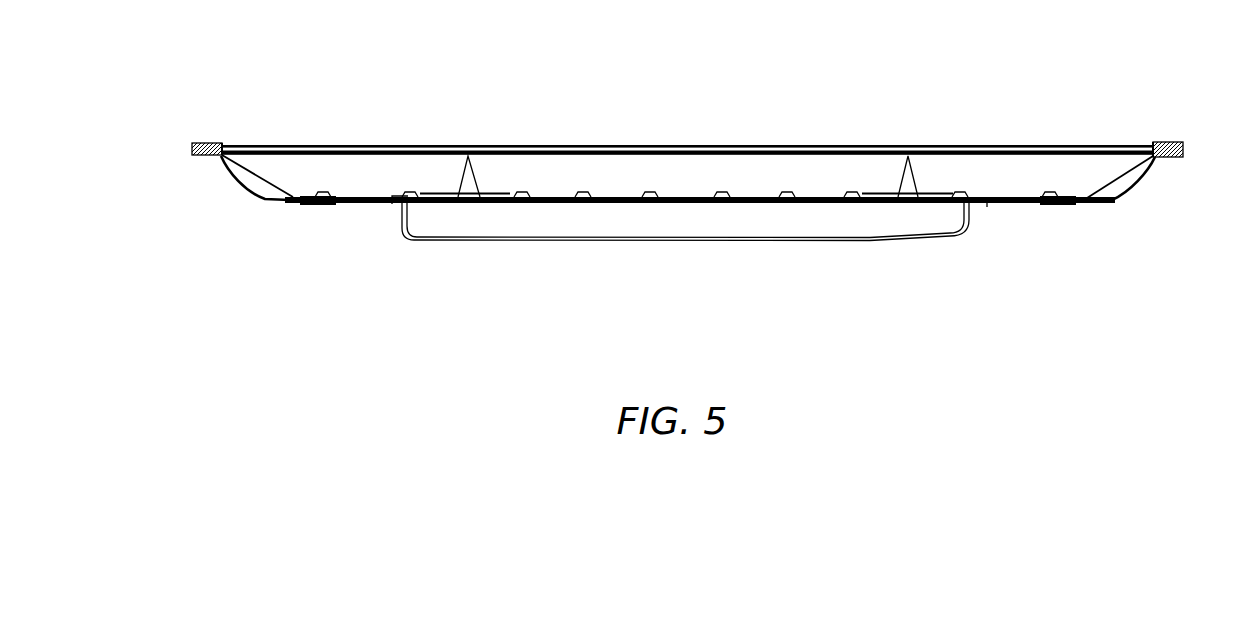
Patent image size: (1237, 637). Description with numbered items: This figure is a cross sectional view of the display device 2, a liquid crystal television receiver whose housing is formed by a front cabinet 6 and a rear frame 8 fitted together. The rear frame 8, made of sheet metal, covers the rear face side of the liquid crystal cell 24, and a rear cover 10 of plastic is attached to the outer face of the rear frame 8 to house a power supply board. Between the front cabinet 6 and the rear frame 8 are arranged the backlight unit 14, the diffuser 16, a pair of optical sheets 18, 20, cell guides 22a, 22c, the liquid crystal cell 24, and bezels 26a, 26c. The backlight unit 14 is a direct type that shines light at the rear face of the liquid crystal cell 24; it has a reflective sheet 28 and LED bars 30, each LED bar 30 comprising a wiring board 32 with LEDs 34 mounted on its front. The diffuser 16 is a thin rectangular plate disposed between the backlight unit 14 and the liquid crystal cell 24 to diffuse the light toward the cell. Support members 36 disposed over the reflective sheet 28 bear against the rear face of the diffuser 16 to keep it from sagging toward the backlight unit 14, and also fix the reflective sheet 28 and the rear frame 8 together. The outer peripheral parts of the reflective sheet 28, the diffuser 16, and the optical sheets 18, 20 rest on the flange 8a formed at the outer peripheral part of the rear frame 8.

The display device 2 is at (942, 49).
The front cabinet 6 is at (1183, 148).
The rear frame 8 is at (1138, 184).
The flange 8a is at (212, 157).
The rear cover 10 is at (828, 242).
The backlight unit 14 is at (1015, 190).
The diffuser 16 is at (364, 200).
The optical sheet 18 is at (375, 145).
The optical sheet 20 is at (375, 145).
The cell guide 22a is at (1170, 142).
The cell guide 22c is at (210, 143).
The liquid crystal cell 24 is at (715, 145).
The bezel 26a is at (1160, 142).
The bezel 26c is at (226, 143).
The reflective sheet 28 is at (260, 186).
The LED bar 30 is at (683, 67).
The wiring board 32 is at (622, 189).
The LED 34 is at (652, 193).
The support member 36 is at (474, 180).